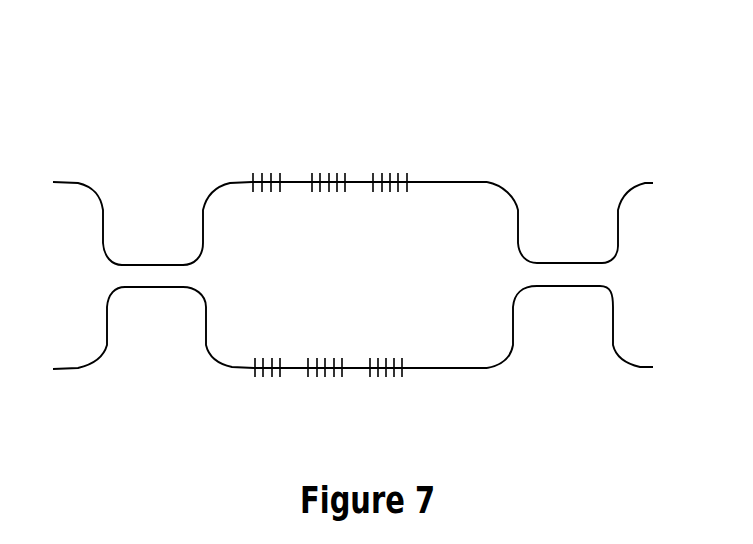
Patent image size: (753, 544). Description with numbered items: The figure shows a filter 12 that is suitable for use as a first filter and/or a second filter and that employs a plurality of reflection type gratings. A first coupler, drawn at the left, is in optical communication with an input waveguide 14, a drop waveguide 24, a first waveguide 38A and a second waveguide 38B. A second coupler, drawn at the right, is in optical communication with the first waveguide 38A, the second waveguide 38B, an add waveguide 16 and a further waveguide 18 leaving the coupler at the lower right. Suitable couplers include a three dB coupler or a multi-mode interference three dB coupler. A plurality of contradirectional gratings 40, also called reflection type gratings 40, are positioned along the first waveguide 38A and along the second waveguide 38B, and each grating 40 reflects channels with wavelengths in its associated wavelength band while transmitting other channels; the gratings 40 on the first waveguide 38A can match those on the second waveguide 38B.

The filter 12 is at (345, 68).
The input waveguide 14 is at (87, 190).
The add waveguide 16 is at (653, 183).
The third conductor end 18 is at (638, 368).
The drop waveguide 24 is at (72, 368).
The first waveguide 38A is at (453, 181).
The second waveguide 38B is at (442, 368).
The contradirectional gratings 40 is at (268, 148).